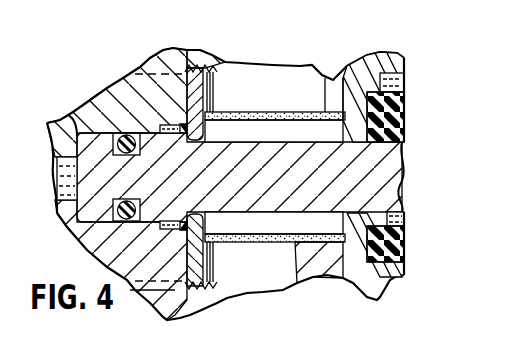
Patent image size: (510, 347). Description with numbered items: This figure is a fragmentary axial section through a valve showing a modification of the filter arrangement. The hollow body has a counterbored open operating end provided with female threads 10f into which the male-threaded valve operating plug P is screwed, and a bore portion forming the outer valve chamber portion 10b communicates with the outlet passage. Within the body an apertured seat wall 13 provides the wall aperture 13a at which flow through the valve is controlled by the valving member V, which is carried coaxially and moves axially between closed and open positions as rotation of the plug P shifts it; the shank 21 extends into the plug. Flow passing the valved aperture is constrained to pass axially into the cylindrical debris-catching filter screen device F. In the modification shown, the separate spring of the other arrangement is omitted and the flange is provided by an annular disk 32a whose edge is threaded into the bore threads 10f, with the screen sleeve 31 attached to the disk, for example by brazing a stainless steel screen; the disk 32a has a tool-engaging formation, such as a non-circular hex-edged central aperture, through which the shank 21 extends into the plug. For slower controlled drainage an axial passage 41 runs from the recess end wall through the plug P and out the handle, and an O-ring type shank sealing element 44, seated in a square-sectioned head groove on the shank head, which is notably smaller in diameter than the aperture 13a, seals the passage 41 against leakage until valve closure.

The shank 21 is at (244, 185).
The shank sealing element 44 is at (68, 116).
The axial passage 41 is at (58, 178).
The screen sleeve 31 is at (298, 244).
The female threads 10f is at (218, 66).
The outer valve chamber portion 10b is at (261, 293).
The annular disk 32a is at (214, 80).
The apertured seat wall 13 is at (322, 95).
The wall aperture 13a is at (362, 70).
The filter screen device F is at (271, 108).
The valve operating plug P is at (105, 88).
The valving member V is at (418, 100).